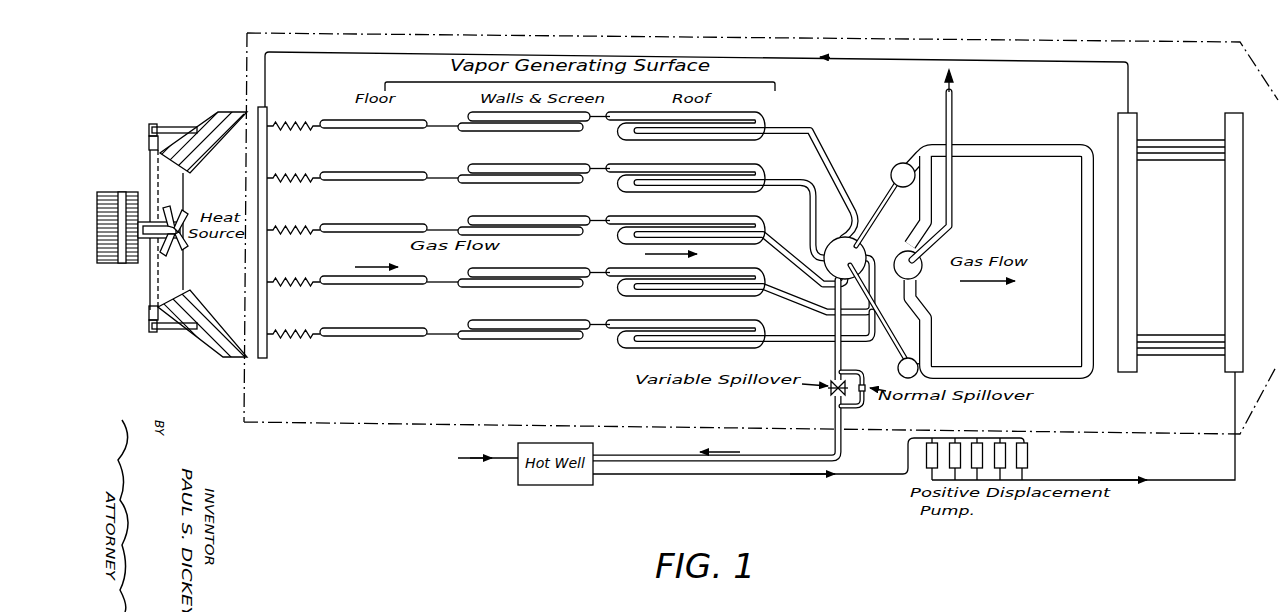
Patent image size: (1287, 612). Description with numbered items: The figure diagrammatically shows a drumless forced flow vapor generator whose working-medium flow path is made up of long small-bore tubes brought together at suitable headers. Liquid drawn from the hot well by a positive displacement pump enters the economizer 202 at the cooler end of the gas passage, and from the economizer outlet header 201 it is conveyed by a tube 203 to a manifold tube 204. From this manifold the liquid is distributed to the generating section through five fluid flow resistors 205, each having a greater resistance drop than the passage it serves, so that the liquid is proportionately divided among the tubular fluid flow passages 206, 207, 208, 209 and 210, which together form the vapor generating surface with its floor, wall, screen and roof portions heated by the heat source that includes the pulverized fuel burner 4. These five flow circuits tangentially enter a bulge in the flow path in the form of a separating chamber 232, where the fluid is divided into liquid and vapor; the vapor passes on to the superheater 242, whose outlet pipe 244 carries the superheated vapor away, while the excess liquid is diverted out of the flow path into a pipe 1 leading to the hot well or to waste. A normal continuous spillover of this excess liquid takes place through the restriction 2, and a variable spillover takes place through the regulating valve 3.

The pipe 1 is at (841, 449).
The restriction 2 is at (865, 404).
The regulating valve 3 is at (834, 393).
The pulverized fuel burner 4 is at (143, 270).
The economizer outlet header 201 is at (1131, 374).
The economizer 202 is at (1190, 229).
The tube 203 is at (1042, 62).
The manifold tube 204 is at (270, 108).
The fluid flow resistors 205 is at (295, 288).
The tubular fluid flow passage 206 is at (384, 134).
The tubular fluid flow passage 207 is at (384, 186).
The tubular fluid flow passage 208 is at (379, 238).
The tubular fluid flow passage 209 is at (384, 290).
The tubular fluid flow passage 210 is at (385, 330).
The separating chamber 232 is at (842, 235).
The superheater 242 is at (989, 235).
The superheater outlet pipe 244 is at (945, 105).